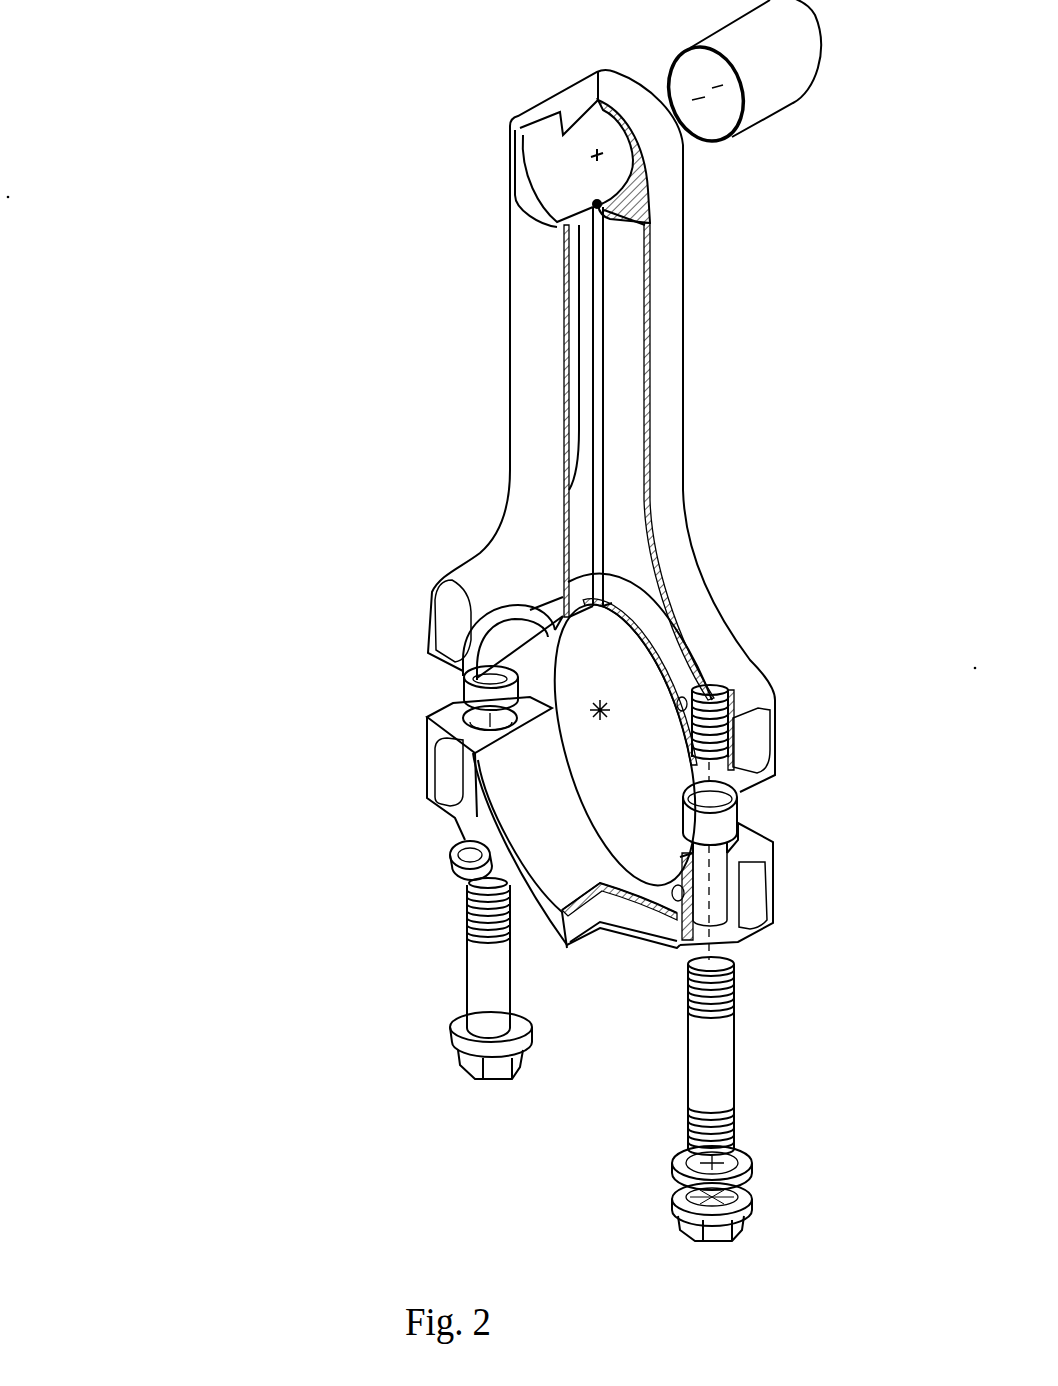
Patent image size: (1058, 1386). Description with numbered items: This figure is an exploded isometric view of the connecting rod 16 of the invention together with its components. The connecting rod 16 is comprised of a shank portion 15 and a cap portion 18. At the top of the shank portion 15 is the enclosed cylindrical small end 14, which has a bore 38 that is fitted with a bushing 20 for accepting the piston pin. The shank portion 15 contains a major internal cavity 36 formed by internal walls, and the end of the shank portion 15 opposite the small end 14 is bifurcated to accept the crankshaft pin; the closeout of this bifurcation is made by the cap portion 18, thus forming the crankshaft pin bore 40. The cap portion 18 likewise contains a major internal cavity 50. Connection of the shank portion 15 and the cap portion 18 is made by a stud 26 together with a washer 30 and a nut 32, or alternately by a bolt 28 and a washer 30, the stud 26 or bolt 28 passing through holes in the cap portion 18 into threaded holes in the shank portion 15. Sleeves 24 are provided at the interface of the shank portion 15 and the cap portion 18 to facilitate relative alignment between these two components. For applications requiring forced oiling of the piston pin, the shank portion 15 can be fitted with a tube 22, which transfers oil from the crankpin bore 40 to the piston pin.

The small end 14 is at (522, 120).
The shank portion 15 is at (533, 477).
The connecting rod 16 is at (158, 561).
The cap portion 18 is at (465, 840).
The bushing 20 is at (765, 82).
The tube 22 is at (600, 543).
The sleeves 24 is at (722, 820).
The stud 26 is at (715, 1057).
The bolt 28 is at (487, 972).
The washer 30 is at (738, 1157).
The nut 32 is at (743, 1198).
The major internal cavity 36 is at (622, 380).
The bore 38 is at (597, 158).
The crankshaft pin bore 40 is at (603, 721).
The major internal cavity 50 is at (650, 927).